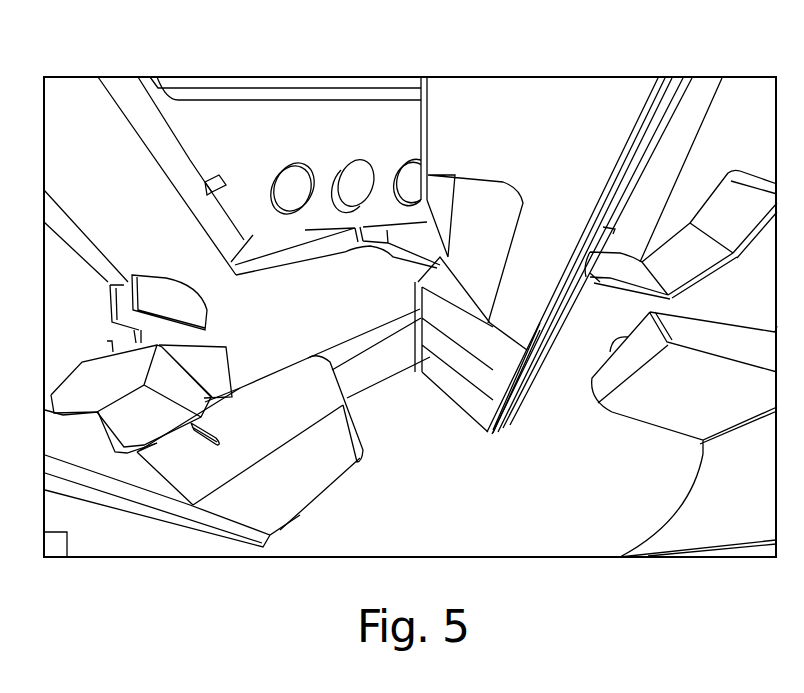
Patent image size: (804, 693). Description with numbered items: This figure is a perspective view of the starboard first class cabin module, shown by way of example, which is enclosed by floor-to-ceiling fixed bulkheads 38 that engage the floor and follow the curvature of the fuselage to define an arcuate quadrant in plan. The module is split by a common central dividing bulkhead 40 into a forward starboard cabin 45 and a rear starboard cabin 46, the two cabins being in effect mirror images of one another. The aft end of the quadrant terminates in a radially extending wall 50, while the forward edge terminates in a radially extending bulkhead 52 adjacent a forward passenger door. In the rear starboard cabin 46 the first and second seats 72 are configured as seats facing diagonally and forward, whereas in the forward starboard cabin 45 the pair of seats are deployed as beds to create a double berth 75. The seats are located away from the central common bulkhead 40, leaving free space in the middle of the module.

The floor-to-ceiling fixed bulkhead 38 is at (715, 492).
The central dividing bulkhead 40 is at (527, 362).
The forward starboard cabin 45 is at (232, 416).
The rear starboard cabin 46 is at (586, 468).
The radially extending wall 50 is at (715, 128).
The radially extending bulkhead 52 is at (140, 165).
The seats 72 is at (632, 273).
The double berth 75 is at (322, 312).